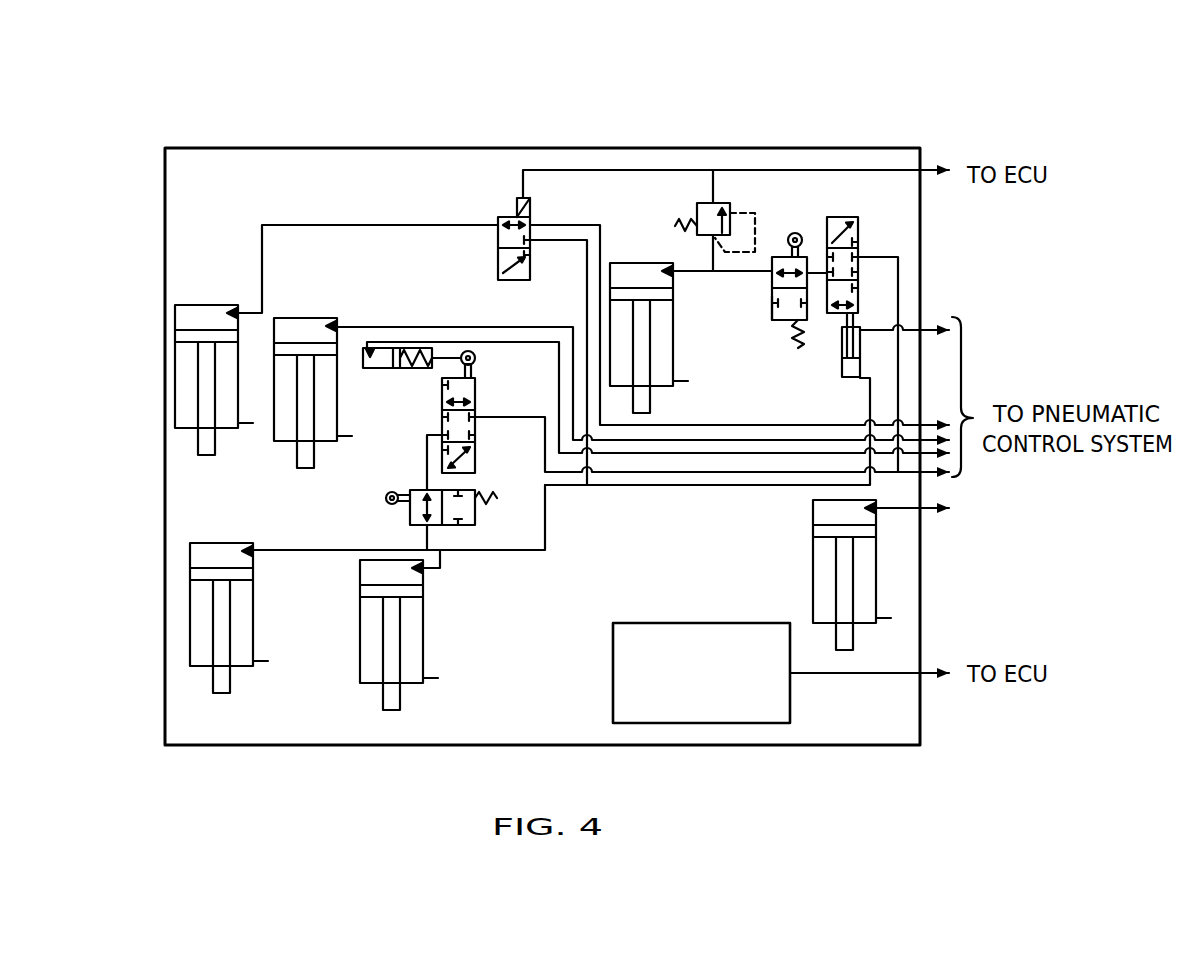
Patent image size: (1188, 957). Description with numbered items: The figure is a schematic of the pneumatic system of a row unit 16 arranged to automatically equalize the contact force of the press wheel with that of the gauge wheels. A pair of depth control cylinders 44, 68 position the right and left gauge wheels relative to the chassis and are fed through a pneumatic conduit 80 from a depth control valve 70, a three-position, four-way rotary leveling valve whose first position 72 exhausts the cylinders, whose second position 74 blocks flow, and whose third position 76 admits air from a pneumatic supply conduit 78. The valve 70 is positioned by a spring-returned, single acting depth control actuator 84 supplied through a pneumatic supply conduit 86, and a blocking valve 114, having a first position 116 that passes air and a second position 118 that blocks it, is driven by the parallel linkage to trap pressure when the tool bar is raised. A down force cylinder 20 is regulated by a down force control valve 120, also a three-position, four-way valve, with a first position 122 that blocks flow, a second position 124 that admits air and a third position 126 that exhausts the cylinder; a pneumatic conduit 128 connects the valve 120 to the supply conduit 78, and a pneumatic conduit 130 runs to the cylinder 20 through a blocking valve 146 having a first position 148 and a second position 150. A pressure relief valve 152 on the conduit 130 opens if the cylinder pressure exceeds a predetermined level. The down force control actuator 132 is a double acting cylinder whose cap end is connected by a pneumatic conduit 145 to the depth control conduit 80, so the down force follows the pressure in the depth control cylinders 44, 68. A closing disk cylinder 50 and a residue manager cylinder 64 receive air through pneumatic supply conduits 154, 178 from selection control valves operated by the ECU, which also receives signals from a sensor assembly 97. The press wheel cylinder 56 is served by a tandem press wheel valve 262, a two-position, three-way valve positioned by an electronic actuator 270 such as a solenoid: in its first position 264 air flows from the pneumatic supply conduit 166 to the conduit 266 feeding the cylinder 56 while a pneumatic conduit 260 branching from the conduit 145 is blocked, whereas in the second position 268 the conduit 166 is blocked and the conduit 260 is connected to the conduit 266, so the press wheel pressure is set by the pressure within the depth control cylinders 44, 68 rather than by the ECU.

The row unit 16 is at (242, 147).
The down force cylinder 20 is at (638, 263).
The first depth control cylinder 44 is at (252, 628).
The closing disk cylinder 50 is at (288, 443).
The press wheel cylinder 56 is at (210, 304).
The residue manager cylinder 64 is at (813, 593).
The second depth control cylinder 68 is at (423, 643).
The depth control valve 70 is at (453, 426).
The first position 72 is at (442, 395).
The second position 74 is at (476, 427).
The third position 76 is at (442, 452).
The pneumatic supply conduit 78 is at (617, 472).
The pneumatic conduit 80 is at (317, 552).
The depth control actuator 84 is at (376, 370).
The pneumatic supply conduit 86 is at (673, 458).
The sensor assembly 97 is at (613, 677).
The blocking valve 114 is at (445, 536).
The first position 116 is at (410, 513).
The second position 118 is at (476, 516).
The down force control valve 120 is at (894, 212).
The first position 122 is at (860, 261).
The second position 124 is at (833, 216).
The third position 126 is at (860, 296).
The pneumatic conduit 128 is at (880, 252).
The pneumatic conduit 130 is at (701, 274).
The down force control actuator 132 is at (841, 340).
The pneumatic conduit 145 is at (757, 487).
The blocking valve 146 is at (753, 289).
The first position 148 is at (778, 250).
The second position 150 is at (773, 300).
The pressure relief valve 152 is at (688, 199).
The pneumatic supply conduit 154 is at (415, 327).
The pneumatic supply conduit 166 is at (548, 222).
The pneumatic supply conduit 178 is at (890, 508).
The pneumatic conduit 260 is at (585, 305).
The tandem press wheel valve 262 is at (469, 199).
The first position 264 is at (498, 236).
The conduit 266 is at (323, 225).
The second position 268 is at (498, 276).
The electronic actuator 270 is at (517, 209).